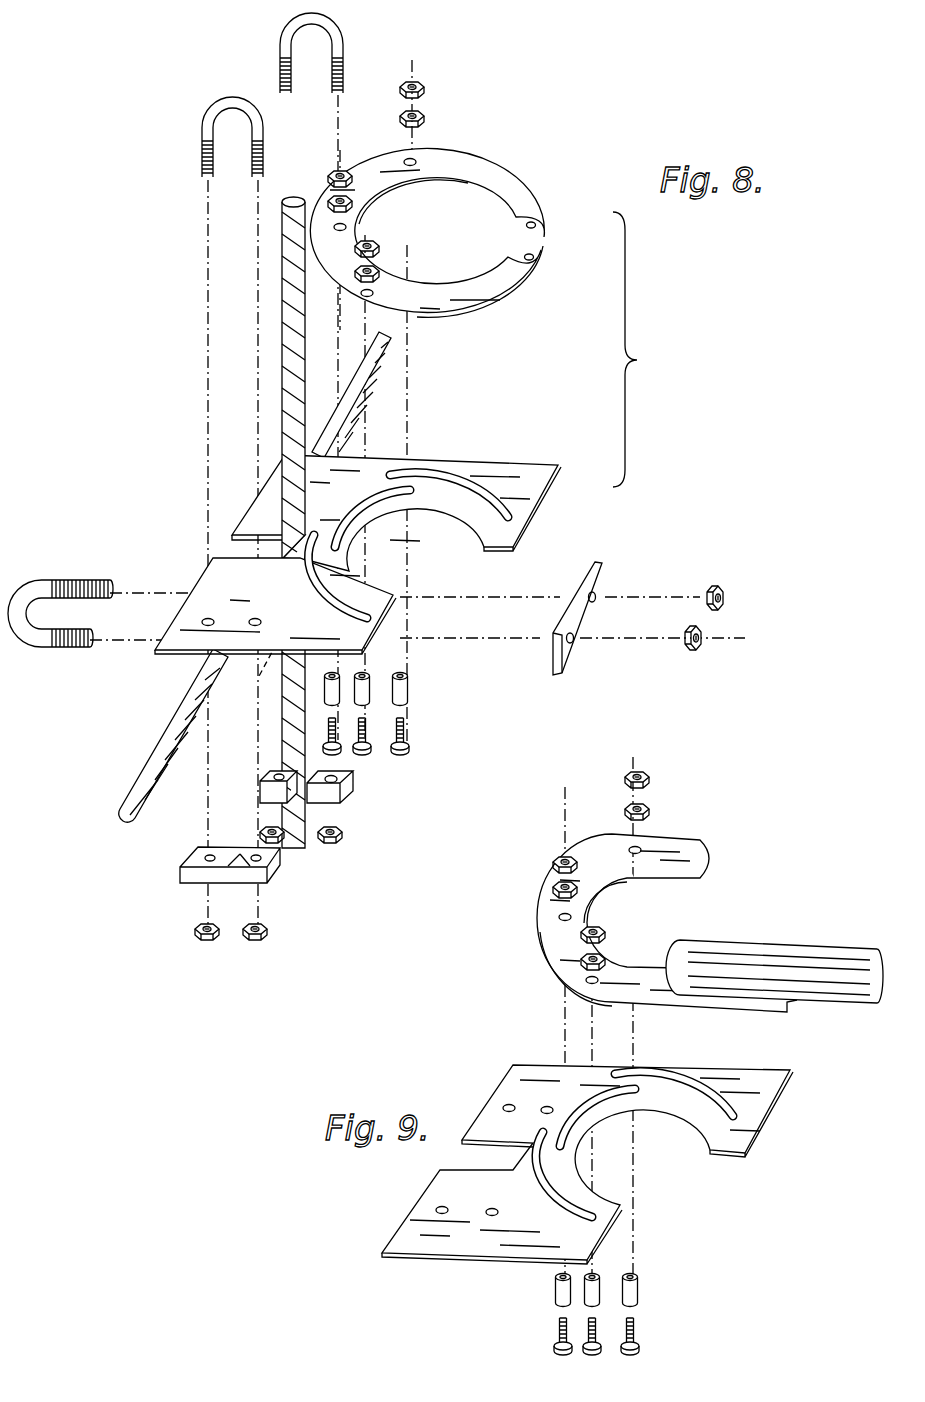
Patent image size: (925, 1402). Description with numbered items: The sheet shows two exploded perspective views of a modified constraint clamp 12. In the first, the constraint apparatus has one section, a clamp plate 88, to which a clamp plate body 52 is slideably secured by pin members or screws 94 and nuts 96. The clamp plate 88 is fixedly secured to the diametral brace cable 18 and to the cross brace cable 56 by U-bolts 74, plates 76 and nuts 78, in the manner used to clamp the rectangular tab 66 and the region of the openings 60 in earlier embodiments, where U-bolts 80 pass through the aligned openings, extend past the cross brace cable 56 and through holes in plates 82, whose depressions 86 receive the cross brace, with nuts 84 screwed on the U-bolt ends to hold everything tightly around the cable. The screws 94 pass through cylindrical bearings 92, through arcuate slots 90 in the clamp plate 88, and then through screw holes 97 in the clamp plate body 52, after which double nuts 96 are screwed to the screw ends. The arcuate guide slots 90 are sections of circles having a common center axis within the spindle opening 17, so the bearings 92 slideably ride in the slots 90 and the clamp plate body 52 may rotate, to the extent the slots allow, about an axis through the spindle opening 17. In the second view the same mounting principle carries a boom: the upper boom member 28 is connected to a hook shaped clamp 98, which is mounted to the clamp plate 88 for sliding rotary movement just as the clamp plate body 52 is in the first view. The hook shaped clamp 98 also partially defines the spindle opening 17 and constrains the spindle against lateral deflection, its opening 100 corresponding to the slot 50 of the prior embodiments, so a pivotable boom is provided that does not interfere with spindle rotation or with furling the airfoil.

In FIG. 8, the constraint clamp 12 is at (641, 349).
In FIG. 8, the spindle opening 17 is at (482, 215).
In FIG. 9, the spindle opening 17 is at (560, 914).
In FIG. 8, the diametral brace cable 18 is at (283, 243).
In FIG. 9, the upper boom member 28 is at (838, 946).
In FIG. 8, the slot 50 is at (557, 249).
In FIG. 8, the clamp plate body 52 is at (520, 183).
In FIG. 8, the cross brace cable 56 is at (152, 753).
In FIG. 8, the openings 60 is at (255, 618).
In FIG. 8, the rectangular tab 66 is at (262, 666).
In FIG. 8, the U-bolts 74 is at (66, 580).
In FIG. 8, the plates 76 is at (600, 578).
In FIG. 8, the nuts 78 is at (708, 638).
In FIG. 8, the U-bolts 80 is at (232, 97).
In FIG. 8, the plates 82 is at (264, 777).
In FIG. 8, the nuts 84 is at (284, 840).
In FIG. 8, the depressions 86 is at (236, 856).
In FIG. 8, the clamp plate 88 is at (521, 462).
In FIG. 9, the clamp plate 88 is at (776, 1080).
In FIG. 8, the arcuate slots 90 is at (430, 472).
In FIG. 9, the arcuate slots 90 is at (742, 1121).
In FIG. 8, the cylindrical bearings 92 is at (360, 672).
In FIG. 9, the cylindrical bearings 92 is at (632, 1274).
In FIG. 8, the screws 94 is at (402, 752).
In FIG. 9, the screws 94 is at (588, 1332).
In FIG. 8, the nuts 96 is at (424, 114).
In FIG. 9, the nuts 96 is at (651, 810).
In FIG. 8, the screw holes 97 is at (418, 161).
In FIG. 9, the hook shaped clamp 98 is at (706, 846).
In FIG. 9, the opening 100 is at (716, 902).